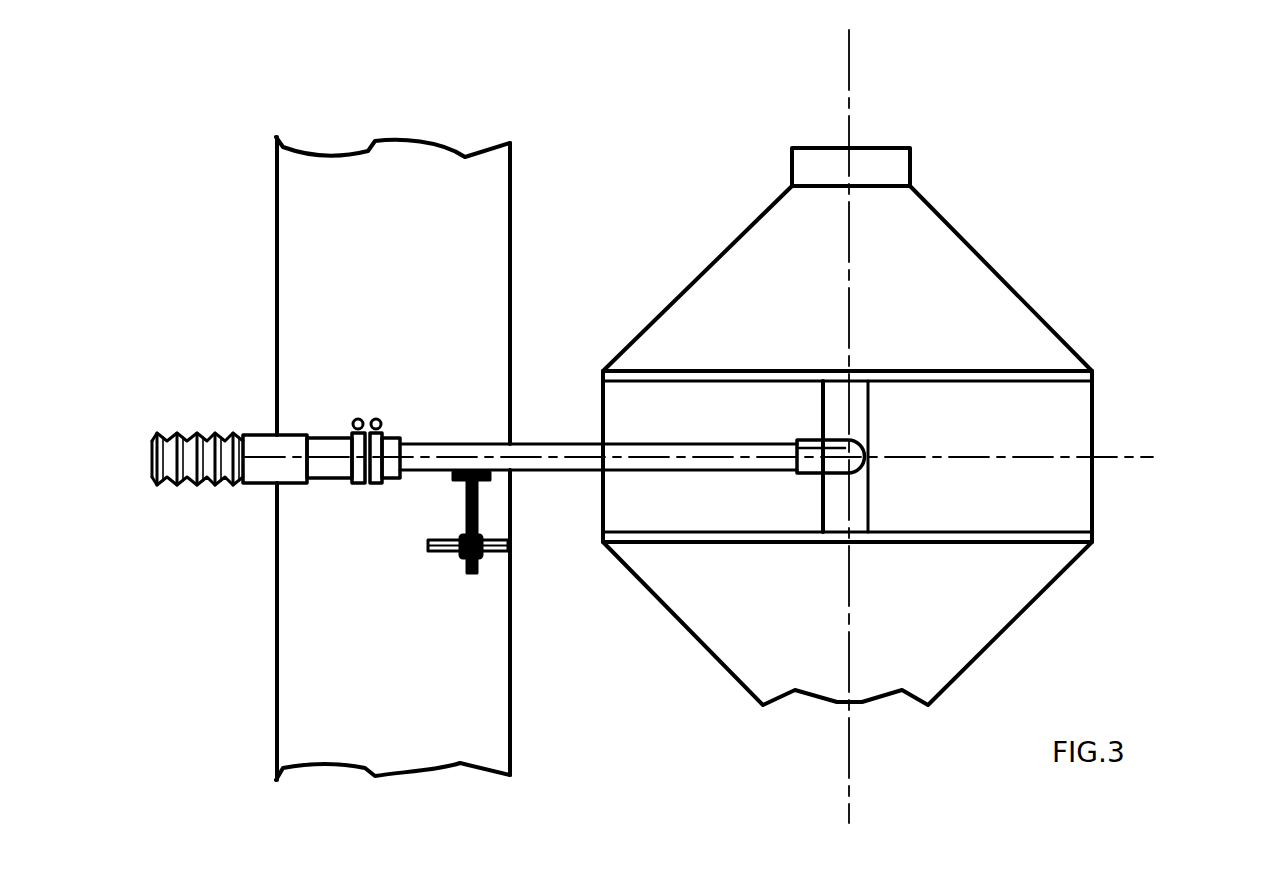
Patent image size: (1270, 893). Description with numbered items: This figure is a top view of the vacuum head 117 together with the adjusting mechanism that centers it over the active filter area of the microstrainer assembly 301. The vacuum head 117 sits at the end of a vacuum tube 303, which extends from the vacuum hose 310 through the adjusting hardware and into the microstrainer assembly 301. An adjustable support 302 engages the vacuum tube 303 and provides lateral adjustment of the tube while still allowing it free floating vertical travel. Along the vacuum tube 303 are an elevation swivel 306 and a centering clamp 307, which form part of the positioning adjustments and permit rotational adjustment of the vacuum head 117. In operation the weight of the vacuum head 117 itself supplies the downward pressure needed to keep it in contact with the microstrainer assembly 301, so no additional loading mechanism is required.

The microstrainer assembly 301 is at (1092, 422).
The vacuum head 117 is at (815, 440).
The vacuum tube 303 is at (720, 444).
The adjustable support 302 is at (487, 475).
The elevation swivel 306 is at (377, 420).
The centering clamp 307 is at (358, 483).
The vacuum hose 310 is at (173, 485).